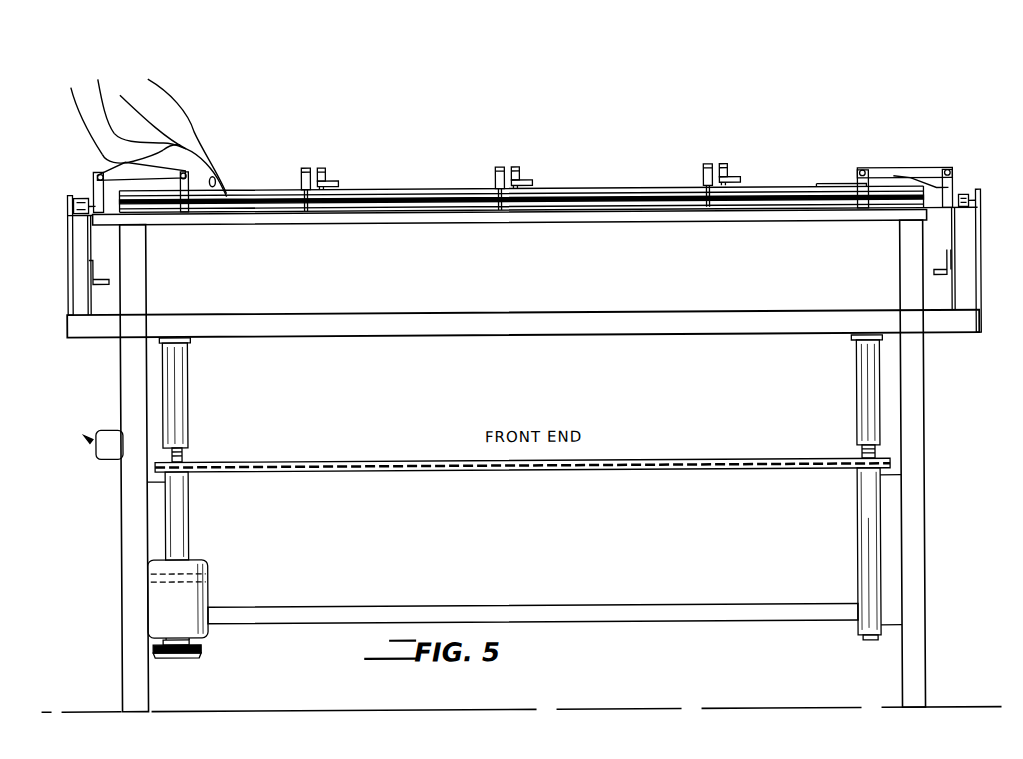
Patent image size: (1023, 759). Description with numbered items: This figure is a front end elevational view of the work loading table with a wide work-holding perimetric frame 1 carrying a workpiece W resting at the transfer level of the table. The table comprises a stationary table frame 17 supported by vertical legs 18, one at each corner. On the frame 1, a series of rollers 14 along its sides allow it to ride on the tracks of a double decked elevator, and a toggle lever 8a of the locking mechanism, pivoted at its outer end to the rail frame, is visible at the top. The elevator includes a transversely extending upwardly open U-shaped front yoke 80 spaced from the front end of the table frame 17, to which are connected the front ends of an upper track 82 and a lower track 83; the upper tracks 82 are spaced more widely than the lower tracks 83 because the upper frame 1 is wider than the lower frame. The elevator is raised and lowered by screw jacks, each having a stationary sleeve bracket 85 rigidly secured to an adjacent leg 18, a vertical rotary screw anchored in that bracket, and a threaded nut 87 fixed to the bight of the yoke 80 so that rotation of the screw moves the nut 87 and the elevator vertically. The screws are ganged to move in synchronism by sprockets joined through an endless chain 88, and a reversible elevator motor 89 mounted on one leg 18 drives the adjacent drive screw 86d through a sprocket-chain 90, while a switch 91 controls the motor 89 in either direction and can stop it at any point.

The roller 14 is at (80, 196).
The workpiece W is at (425, 188).
The upper perimetric frame 1 is at (592, 190).
The toggle lever 8a is at (890, 173).
The upper track 82 is at (980, 193).
The table frame 17 is at (596, 215).
The front yoke 80 is at (437, 318).
The lower track 83 is at (936, 264).
The switch 91 is at (100, 446).
The nut 87 is at (178, 437).
The drive screw 86d is at (185, 460).
The endless chain 88 is at (514, 471).
The vertical leg 18 is at (130, 565).
The elevator motor 89 is at (200, 576).
The sprocket-chain 90 is at (200, 650).
The sleeve bracket 85 is at (863, 555).